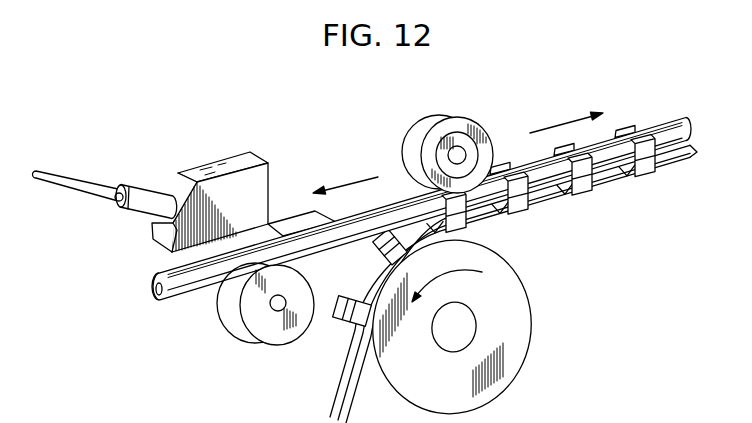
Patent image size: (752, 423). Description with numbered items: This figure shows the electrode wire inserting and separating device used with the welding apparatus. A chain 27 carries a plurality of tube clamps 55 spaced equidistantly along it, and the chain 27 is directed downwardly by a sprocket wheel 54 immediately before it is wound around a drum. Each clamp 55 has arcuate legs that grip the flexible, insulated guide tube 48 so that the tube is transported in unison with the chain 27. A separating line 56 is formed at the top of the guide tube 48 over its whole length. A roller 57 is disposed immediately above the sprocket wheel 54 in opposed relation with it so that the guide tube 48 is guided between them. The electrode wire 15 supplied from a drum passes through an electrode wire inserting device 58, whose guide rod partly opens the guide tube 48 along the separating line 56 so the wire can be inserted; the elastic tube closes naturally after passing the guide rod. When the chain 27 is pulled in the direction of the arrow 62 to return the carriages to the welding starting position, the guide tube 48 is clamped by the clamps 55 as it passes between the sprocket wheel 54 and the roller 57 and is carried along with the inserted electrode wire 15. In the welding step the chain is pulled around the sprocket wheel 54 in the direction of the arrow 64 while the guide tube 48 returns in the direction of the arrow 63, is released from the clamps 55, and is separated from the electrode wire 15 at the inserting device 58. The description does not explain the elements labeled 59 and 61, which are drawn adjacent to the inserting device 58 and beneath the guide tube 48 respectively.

The electrode wire 15 is at (90, 178).
The chain 27 is at (544, 204).
The flexible guide tube 48 is at (183, 299).
The sprocket wheel 54 is at (512, 355).
The tube clamp 55 is at (645, 175).
The separating line 56 is at (398, 200).
The roller 57 is at (455, 114).
The electrode wire inserting device 58 is at (233, 156).
The nozzle 59 is at (123, 212).
The lower roller 61 is at (265, 340).
The arrow indicating chain pulling direction 62 is at (565, 121).
The arrow indicating guide tube return direction 63 is at (350, 179).
The arrow indicating sprocket wheel chain direction 64 is at (457, 249).